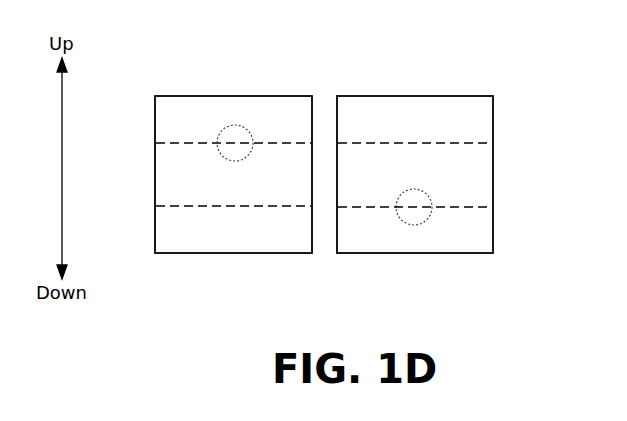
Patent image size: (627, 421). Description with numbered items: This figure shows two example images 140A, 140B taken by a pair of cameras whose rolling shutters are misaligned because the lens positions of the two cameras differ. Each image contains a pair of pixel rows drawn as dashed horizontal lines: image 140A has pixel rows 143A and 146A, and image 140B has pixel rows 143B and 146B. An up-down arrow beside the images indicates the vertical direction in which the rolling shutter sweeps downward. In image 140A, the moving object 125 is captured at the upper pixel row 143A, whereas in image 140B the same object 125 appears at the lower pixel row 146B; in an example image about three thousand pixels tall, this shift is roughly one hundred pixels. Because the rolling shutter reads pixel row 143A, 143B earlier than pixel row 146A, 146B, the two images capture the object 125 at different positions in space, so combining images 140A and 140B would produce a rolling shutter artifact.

The object 125 is at (234, 120).
The image 140A is at (233, 196).
The image 140B is at (415, 195).
The pixel row 143A is at (156, 143).
The pixel row 143B is at (493, 143).
The pixel row 146A is at (156, 206).
The pixel row 146B is at (493, 207).